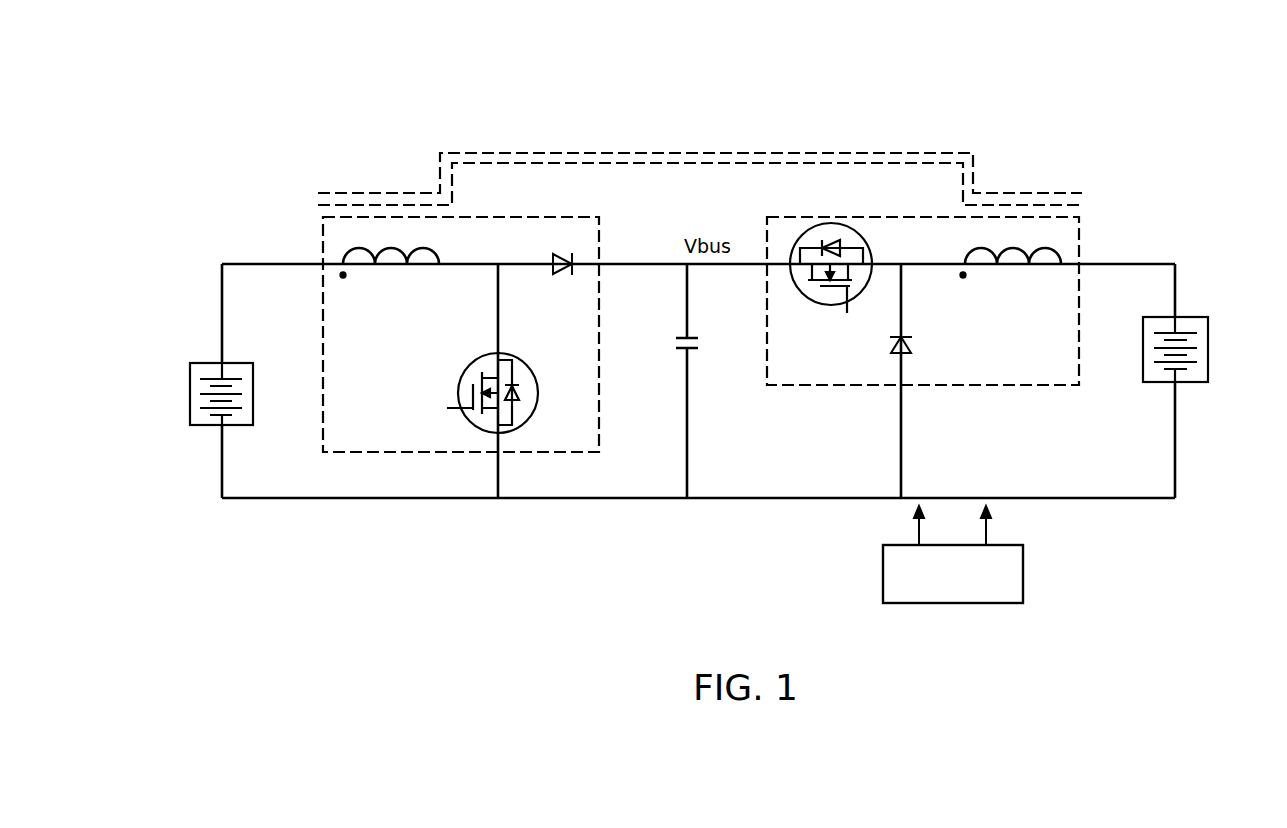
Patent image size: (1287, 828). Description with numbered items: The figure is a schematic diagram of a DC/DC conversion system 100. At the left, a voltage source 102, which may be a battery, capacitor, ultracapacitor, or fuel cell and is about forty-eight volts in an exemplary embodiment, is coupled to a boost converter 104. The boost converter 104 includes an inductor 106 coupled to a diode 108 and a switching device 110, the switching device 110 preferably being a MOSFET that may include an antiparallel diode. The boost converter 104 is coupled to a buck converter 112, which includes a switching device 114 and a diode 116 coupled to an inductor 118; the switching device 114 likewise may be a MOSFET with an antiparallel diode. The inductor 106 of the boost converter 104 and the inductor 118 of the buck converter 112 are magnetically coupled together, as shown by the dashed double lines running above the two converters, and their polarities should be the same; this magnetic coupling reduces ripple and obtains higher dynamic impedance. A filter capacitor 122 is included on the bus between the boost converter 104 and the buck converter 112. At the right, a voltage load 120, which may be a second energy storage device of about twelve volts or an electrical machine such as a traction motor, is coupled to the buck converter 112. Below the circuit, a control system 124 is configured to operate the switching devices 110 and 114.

The DC/DC conversion system 100 is at (1158, 90).
The voltage source 102 is at (201, 362).
The boost converter 104 is at (600, 425).
The inductor 106 is at (430, 252).
The diode 108 is at (565, 276).
The switching device 110 is at (459, 372).
The buck converter 112 is at (985, 390).
The switching device 114 is at (815, 301).
The diode 116 is at (911, 340).
The inductor 118 is at (1010, 242).
The voltage load 120 is at (1198, 315).
The filter capacitor 122 is at (697, 352).
The control system 124 is at (1025, 573).